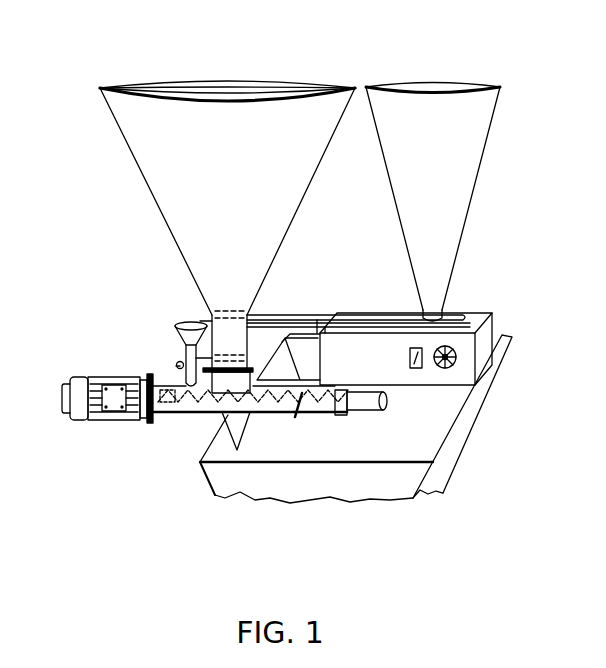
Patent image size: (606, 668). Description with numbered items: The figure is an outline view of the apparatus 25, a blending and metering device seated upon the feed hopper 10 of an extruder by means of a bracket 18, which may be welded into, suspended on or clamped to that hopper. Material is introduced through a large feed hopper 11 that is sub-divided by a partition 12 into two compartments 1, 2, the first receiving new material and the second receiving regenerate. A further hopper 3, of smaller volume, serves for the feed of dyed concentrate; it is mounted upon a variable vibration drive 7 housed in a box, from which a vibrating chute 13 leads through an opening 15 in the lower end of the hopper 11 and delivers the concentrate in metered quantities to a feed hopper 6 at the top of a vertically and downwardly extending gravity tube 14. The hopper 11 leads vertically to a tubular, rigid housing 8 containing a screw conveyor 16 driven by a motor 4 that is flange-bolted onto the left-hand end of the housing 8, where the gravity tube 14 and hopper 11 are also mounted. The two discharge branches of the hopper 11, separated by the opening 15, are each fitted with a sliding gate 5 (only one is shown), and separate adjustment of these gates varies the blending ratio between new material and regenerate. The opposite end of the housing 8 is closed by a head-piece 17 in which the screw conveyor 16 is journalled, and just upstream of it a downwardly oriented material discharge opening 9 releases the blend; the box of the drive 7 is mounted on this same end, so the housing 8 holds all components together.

The compartment 1 is at (222, 79).
The compartment 2 is at (292, 88).
The further hopper 3 is at (436, 84).
The motor 4 is at (98, 420).
The sliding gate 5 is at (177, 364).
The feed hopper 6 is at (184, 323).
The variable vibration drive 7 is at (448, 357).
The tubular rigid housing 8 is at (162, 420).
The material discharge opening 9 is at (300, 410).
The hopper 10 is at (210, 481).
The feed hopper 11 is at (163, 194).
The partition 12 is at (166, 86).
The vibrating chute 13 is at (305, 318).
The gravity tube 14 is at (176, 367).
The opening 15 is at (233, 311).
The screw conveyor 16 is at (337, 400).
The head-piece 17 is at (376, 412).
The bracket 18 is at (227, 418).
The apparatus 25 is at (88, 118).